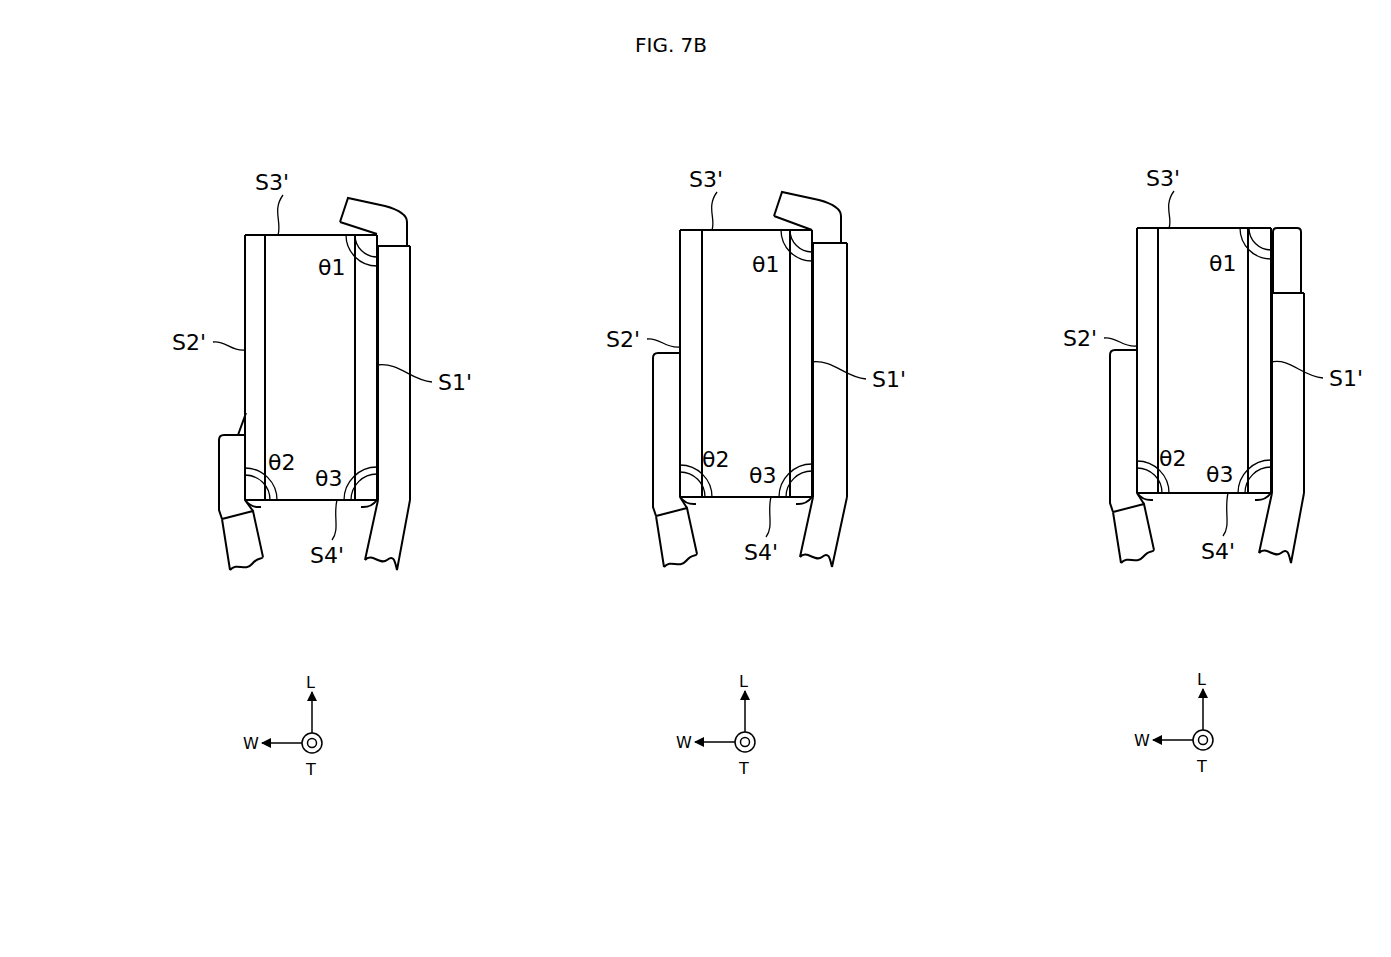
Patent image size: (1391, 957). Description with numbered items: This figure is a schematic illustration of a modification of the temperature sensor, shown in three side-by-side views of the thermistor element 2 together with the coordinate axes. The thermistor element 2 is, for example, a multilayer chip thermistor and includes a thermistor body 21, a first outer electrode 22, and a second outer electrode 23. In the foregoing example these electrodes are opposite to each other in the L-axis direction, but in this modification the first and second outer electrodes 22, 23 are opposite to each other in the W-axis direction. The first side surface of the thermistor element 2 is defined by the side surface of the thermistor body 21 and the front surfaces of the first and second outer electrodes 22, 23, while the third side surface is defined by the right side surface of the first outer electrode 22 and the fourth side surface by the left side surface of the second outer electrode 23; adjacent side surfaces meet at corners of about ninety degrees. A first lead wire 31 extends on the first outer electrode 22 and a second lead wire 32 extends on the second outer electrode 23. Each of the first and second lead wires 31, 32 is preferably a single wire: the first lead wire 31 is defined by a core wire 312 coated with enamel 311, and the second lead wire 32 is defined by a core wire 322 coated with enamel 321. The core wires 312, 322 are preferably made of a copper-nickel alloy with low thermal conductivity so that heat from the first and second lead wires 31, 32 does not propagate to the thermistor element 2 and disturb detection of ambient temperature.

The thermistor element 2 is at (218, 185).
The thermistor body 21 is at (294, 515).
The first outer electrode 22 is at (368, 398).
The second outer electrode 23 is at (237, 313).
The first lead wire 31 is at (423, 313).
The enamel 311 is at (410, 470).
The core wire 312 is at (407, 222).
The second lead wire 32 is at (639, 460).
The enamel 321 is at (222, 545).
The core wire 322 is at (219, 470).